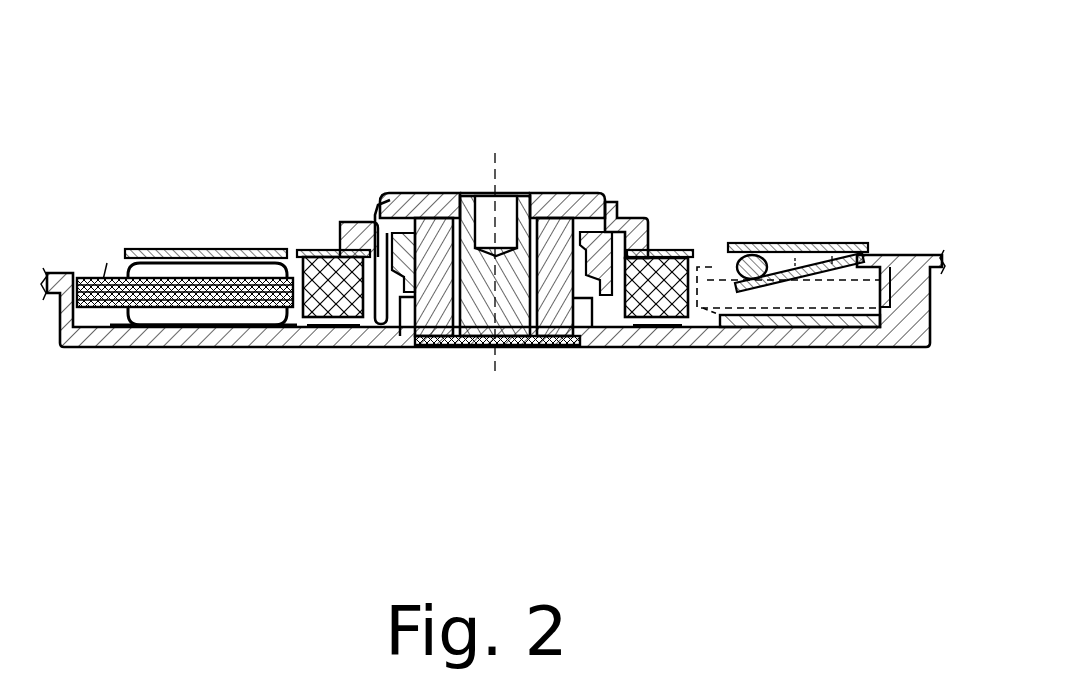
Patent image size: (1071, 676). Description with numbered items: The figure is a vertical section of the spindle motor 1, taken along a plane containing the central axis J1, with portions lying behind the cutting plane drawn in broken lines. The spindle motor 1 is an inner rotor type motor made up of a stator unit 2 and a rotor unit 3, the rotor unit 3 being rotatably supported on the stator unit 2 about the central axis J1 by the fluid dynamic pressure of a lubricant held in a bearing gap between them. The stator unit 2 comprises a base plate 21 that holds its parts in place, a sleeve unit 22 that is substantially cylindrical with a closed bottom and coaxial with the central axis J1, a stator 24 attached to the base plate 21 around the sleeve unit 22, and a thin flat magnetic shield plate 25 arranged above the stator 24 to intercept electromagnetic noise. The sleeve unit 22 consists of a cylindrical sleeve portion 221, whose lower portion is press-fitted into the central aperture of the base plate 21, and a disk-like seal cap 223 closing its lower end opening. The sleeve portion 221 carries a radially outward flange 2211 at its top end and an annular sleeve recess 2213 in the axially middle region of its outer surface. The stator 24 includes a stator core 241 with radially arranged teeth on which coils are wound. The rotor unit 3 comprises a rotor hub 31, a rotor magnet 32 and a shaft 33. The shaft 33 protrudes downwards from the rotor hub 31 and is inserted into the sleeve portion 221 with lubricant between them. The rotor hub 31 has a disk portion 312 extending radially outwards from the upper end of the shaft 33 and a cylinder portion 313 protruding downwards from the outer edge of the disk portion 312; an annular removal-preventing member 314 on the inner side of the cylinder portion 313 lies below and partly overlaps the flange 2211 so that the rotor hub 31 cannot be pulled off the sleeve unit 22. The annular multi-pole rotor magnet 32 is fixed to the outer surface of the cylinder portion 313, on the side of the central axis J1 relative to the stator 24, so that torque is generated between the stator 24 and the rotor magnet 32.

The spindle motor 1 is at (176, 116).
The stator unit 2 is at (135, 494).
The base plate 21 is at (291, 332).
The sleeve unit 22 is at (435, 425).
The sleeve portion 221 is at (433, 283).
The flange 2211 is at (398, 194).
The sleeve recess 2213 is at (338, 330).
The seal cap 223 is at (482, 340).
The stator 24 is at (130, 430).
The stator core 241 is at (92, 327).
The magnetic shield plate 25 is at (170, 248).
The rotor unit 3 is at (735, 92).
The rotor hub 31 is at (632, 95).
The disk portion 312 is at (566, 197).
The cylinder portion 313 is at (645, 200).
The removal-preventing member 314 is at (618, 205).
The rotor magnet 32 is at (672, 283).
The shaft 33 is at (528, 197).
The central axis J1 is at (492, 168).